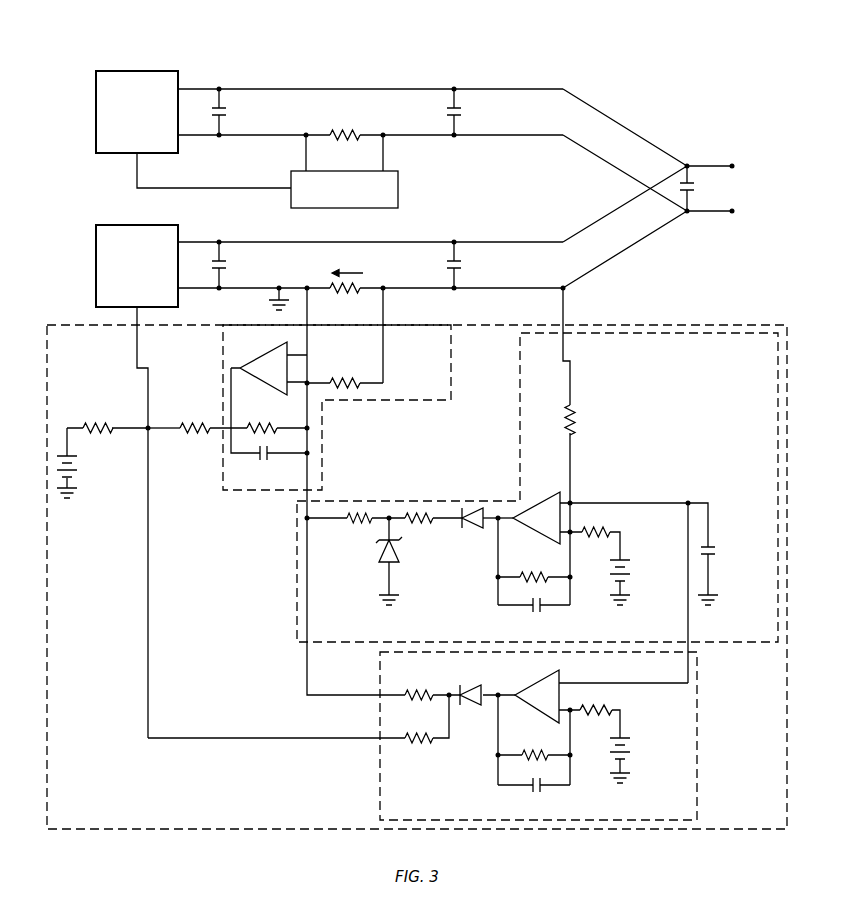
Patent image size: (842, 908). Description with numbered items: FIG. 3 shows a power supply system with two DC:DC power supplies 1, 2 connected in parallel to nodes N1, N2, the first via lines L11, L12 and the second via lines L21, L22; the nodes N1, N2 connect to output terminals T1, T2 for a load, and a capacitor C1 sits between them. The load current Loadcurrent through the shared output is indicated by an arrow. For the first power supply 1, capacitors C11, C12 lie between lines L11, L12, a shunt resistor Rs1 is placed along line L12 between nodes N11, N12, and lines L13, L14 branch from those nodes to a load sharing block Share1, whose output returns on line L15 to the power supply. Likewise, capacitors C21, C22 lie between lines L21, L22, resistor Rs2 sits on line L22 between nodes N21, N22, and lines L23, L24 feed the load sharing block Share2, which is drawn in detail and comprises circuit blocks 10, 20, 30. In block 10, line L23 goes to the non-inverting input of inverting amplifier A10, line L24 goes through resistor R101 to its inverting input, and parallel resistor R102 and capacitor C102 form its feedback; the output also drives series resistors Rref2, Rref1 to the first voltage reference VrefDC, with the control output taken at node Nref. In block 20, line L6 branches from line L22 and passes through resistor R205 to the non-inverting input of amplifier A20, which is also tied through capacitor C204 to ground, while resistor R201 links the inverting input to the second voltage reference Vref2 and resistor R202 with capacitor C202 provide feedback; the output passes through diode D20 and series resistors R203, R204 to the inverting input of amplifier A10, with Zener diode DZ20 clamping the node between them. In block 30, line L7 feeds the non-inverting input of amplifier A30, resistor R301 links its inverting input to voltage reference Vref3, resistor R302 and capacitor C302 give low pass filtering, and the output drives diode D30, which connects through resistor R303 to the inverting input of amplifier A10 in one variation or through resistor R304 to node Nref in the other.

The first DC:DC power supply 1 is at (96, 85).
The second DC:DC power supply 2 is at (96, 240).
The first circuit block 10 is at (455, 345).
The second circuit block 20 is at (519, 420).
The additional circuit block 30 is at (697, 668).
The line L11 is at (550, 88).
The line L12 is at (546, 137).
The line L13 is at (304, 155).
The line L14 is at (387, 153).
The line L15 is at (136, 177).
The line L21 is at (574, 238).
The line L22 is at (606, 254).
The line L23 is at (307, 345).
The line L24 is at (383, 345).
The line L6 is at (563, 301).
The line L7 is at (688, 622).
The node N1 is at (688, 156).
The node N2 is at (688, 222).
The node N11 is at (298, 125).
The node N12 is at (387, 125).
The node N21 is at (299, 278).
The node N22 is at (385, 278).
The output terminal T1 is at (723, 167).
The output terminal T2 is at (723, 212).
The capacitor C1 is at (699, 188).
The capacitor C11 is at (236, 112).
The capacitor C12 is at (471, 112).
The capacitor C21 is at (236, 265).
The capacitor C22 is at (471, 265).
The shunt resistor Rs1 is at (345, 125).
The resistor Rs2 is at (345, 299).
The load sharing block Share1 is at (344, 189).
The load sharing block Share2 is at (738, 324).
The load current direction arrow Loadcurrent is at (342, 264).
The first operational amplifier A10 is at (269, 360).
The resistor R101 is at (345, 374).
The resistor R102 is at (258, 418).
The capacitor C102 is at (269, 426).
The resistor Rref1 is at (107, 418).
The resistor Rref2 is at (180, 418).
The node Nref is at (165, 439).
The first voltage reference VrefDC is at (96, 463).
The resistor R205 is at (593, 420).
The resistor R204 is at (348, 508).
The resistor R203 is at (425, 508).
The diode D20 is at (484, 507).
The Zener diode DZ20 is at (412, 561).
The second operational amplifier A20 is at (541, 510).
The resistor R201 is at (595, 535).
The resistor R202 is at (534, 561).
The capacitor C202 is at (534, 617).
The second voltage reference Vref2 is at (642, 582).
The capacitor C204 is at (665, 554).
The resistor R303 is at (378, 609).
The resistor R304 is at (298, 730).
The diode D30 is at (482, 684).
The third operational amplifier A30 is at (599, 688).
The resistor R301 is at (595, 713).
The resistor R302 is at (534, 740).
The capacitor C302 is at (534, 797).
The voltage reference Vref3 is at (642, 760).